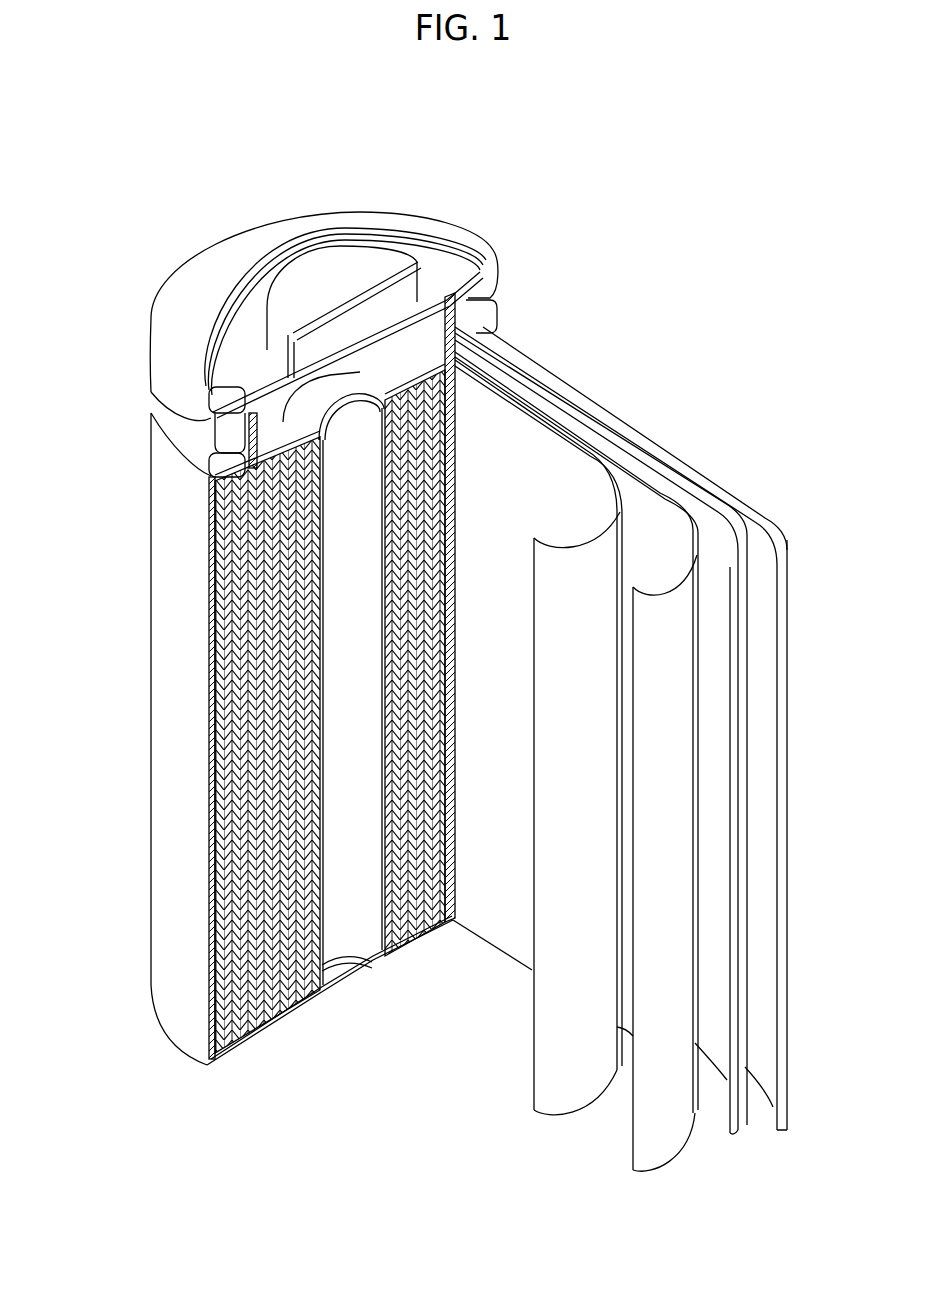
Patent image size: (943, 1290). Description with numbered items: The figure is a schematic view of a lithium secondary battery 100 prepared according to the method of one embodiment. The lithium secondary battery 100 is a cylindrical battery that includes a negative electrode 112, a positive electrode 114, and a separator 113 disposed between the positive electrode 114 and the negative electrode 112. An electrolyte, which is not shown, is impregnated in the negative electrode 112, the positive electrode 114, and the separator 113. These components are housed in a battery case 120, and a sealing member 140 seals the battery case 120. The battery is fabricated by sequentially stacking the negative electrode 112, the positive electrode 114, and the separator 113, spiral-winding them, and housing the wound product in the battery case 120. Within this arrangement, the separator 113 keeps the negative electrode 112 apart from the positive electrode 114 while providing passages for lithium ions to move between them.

The lithium secondary battery 100 is at (433, 627).
The negative electrode 112 is at (768, 538).
The separator 113 is at (557, 435).
The positive electrode 114 is at (640, 488).
The battery case 120 is at (165, 536).
The sealing member 140 is at (332, 258).